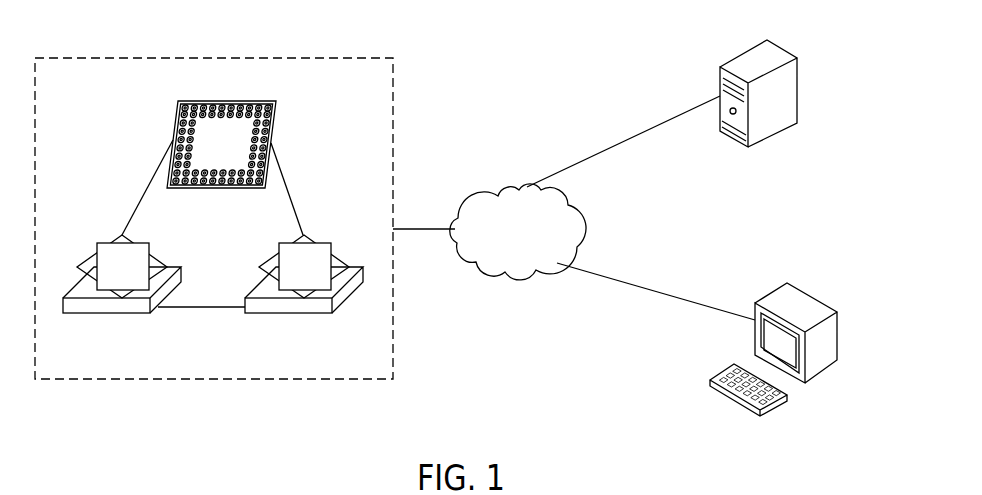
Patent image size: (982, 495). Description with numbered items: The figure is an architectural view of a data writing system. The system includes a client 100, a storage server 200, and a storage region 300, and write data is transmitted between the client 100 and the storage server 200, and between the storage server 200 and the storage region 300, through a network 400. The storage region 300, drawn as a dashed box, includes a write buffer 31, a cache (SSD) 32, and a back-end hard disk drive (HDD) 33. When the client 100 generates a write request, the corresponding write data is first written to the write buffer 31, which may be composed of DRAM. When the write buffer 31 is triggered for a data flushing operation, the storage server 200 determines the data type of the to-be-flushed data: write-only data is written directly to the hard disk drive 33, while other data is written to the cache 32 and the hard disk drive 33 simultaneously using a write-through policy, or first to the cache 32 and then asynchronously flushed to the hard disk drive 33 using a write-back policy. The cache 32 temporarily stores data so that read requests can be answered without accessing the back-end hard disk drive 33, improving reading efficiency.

The storage region 300 is at (312, 58).
The write buffer 31 is at (228, 101).
The cache (SSD) 32 is at (103, 313).
The back-end hard disk drive (HDD) 33 is at (287, 313).
The network 400 is at (577, 207).
The storage server 200 is at (795, 85).
The client 100 is at (817, 302).